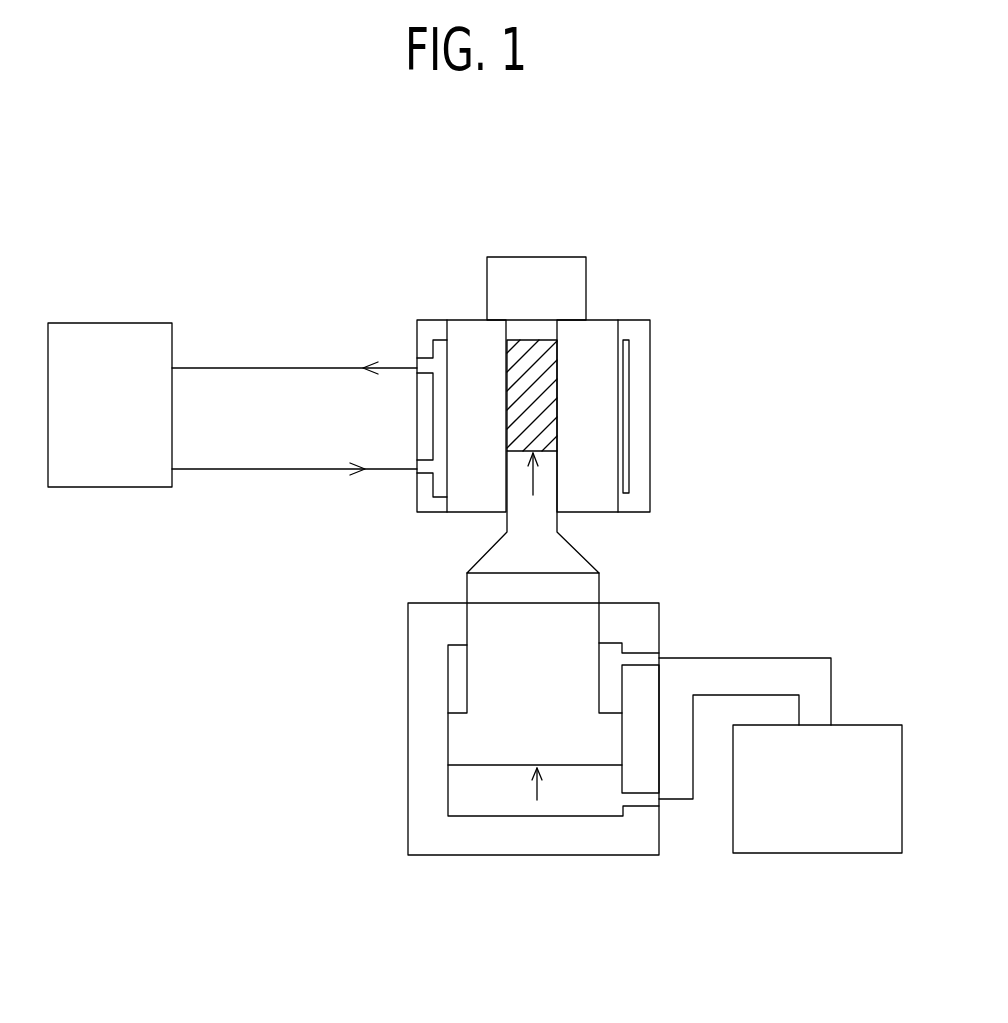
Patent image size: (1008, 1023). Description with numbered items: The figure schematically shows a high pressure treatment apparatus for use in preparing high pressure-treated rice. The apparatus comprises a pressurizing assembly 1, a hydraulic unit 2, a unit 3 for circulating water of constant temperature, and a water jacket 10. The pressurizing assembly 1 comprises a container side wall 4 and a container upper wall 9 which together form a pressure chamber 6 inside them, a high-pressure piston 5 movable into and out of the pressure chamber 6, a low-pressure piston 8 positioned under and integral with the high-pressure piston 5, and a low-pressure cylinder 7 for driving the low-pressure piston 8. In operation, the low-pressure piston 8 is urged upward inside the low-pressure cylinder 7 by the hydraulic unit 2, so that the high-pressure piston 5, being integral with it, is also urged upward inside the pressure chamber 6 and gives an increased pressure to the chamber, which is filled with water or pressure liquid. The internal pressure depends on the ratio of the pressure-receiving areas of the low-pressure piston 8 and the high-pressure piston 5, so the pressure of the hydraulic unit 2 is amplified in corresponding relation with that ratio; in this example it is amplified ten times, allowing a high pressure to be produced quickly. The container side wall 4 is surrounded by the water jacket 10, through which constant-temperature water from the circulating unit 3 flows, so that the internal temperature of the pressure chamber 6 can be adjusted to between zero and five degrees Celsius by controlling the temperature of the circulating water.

The pressurizing assembly 1 is at (462, 533).
The hydraulic unit 2 is at (828, 800).
The unit for circulating water of constant temperature 3 is at (118, 413).
The container side wall 4 is at (595, 402).
The high-pressure piston 5 is at (552, 558).
The pressure chamber 6 is at (515, 373).
The low-pressure cylinder 7 is at (637, 622).
The low-pressure piston 8 is at (548, 672).
The container upper wall 9 is at (543, 275).
The water jacket 10 is at (623, 460).